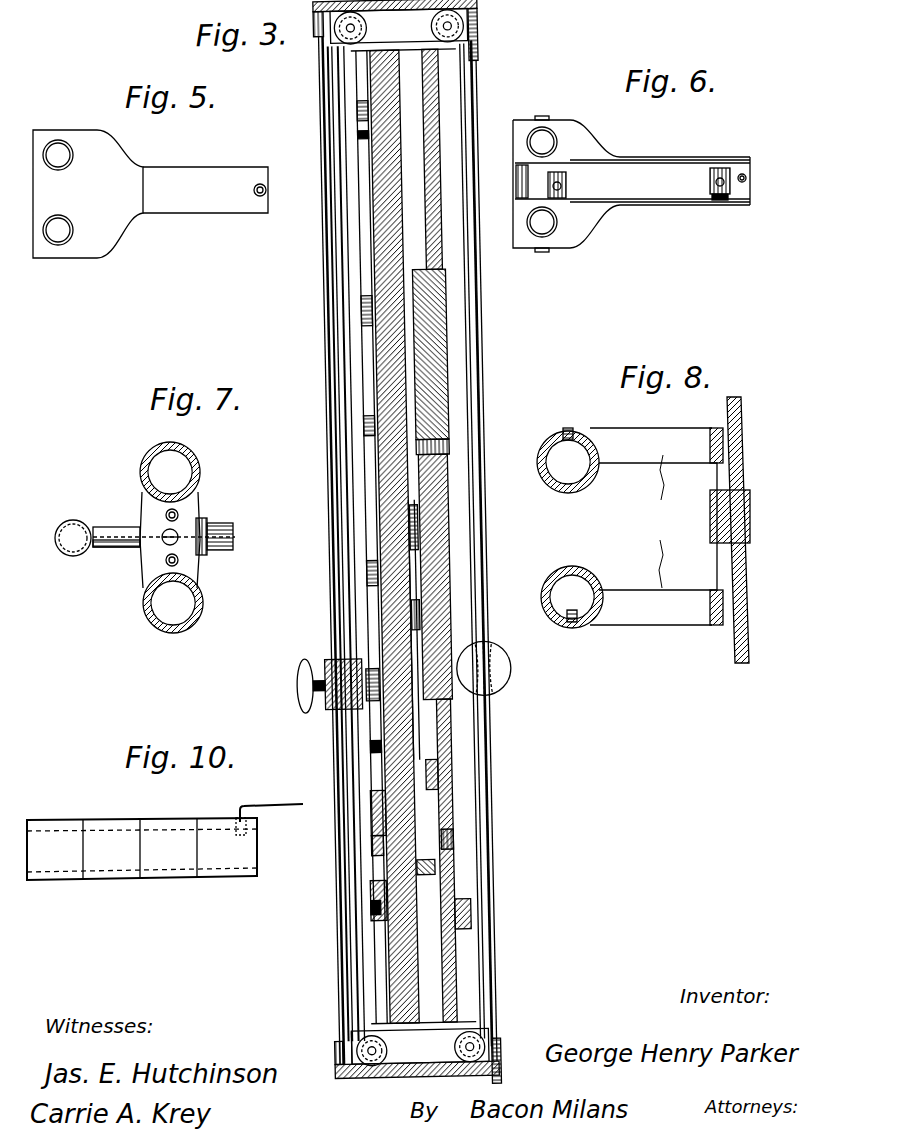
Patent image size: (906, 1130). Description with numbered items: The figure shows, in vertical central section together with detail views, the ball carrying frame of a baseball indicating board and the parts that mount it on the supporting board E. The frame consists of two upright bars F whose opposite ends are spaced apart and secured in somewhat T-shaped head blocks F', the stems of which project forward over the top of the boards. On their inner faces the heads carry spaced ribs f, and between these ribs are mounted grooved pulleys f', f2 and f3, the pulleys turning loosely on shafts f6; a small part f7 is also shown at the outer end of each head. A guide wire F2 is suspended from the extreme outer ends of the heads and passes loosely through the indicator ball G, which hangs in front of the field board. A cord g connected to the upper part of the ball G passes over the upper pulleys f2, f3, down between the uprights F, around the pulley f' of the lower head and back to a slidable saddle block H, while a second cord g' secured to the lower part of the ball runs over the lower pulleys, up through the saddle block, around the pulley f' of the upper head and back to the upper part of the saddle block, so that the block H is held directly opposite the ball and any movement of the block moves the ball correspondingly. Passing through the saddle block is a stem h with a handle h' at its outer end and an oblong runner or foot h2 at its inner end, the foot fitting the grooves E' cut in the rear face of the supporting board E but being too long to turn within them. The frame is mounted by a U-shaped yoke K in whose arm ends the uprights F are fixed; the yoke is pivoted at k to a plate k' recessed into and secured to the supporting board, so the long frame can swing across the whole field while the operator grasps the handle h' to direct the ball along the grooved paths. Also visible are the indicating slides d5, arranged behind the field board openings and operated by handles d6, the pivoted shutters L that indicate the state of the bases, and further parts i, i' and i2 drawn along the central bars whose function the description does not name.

In FIG. 3, the upright bars F is at (392, 549).
In FIG. 5, the upright bars F is at (88, 194).
In FIG. 6, the upright bars F is at (553, 184).
In FIG. 7, the upright bars F is at (178, 470).
In FIG. 8, the upright bars F is at (570, 528).
In FIG. 3, the head blocks F' is at (371, 1064).
In FIG. 5, the head blocks F' is at (191, 190).
In FIG. 6, the head blocks F' is at (632, 201).
In FIG. 3, the guide wire F2 is at (476, 378).
In FIG. 3, the ribs f is at (449, 1020).
In FIG. 6, the ribs f is at (660, 166).
In FIG. 3, the grooved pulleys f' is at (314, 539).
In FIG. 6, the grooved pulleys f' is at (573, 198).
In FIG. 3, the pulley f2 is at (326, 1070).
In FIG. 6, the pulley f2 is at (568, 196).
In FIG. 3, the pulley f3 is at (479, 1045).
In FIG. 6, the pulley f3 is at (725, 201).
In FIG. 3, the shafts f6 is at (368, 1053).
In FIG. 6, the shafts f6 is at (716, 166).
In FIG. 3, the screw f7 is at (480, 50).
In FIG. 5, the screw f7 is at (254, 191).
In FIG. 6, the screw f7 is at (748, 178).
In FIG. 3, the cord g is at (400, 529).
In FIG. 3, the cord g' is at (408, 571).
In FIG. 3, the supporting board E is at (355, 537).
In FIG. 3, the grooves E' is at (342, 538).
In FIG. 3, the shutters L is at (425, 396).
In FIG. 3, the indicator ball G is at (498, 670).
In FIG. 3, the saddle block H is at (325, 660).
In FIG. 7, the saddle block H is at (200, 560).
In FIG. 7, the stem h is at (164, 555).
In FIG. 3, the handle h' is at (297, 686).
In FIG. 7, the handle h' is at (73, 520).
In FIG. 3, the runner or foot h2 is at (366, 686).
In FIG. 7, the runner or foot h2 is at (233, 535).
In FIG. 3, the rod i is at (407, 630).
In FIG. 3, the stop i' is at (391, 836).
In FIG. 3, the pawl i2 is at (402, 905).
In FIG. 3, the pivot k is at (346, 791).
In FIG. 8, the pivot k is at (743, 526).
In FIG. 3, the plate k' is at (476, 844).
In FIG. 8, the plate k' is at (753, 530).
In FIG. 3, the yoke K is at (370, 821).
In FIG. 8, the yoke K is at (653, 526).
In FIG. 3, the slides d5 is at (455, 911).
In FIG. 10, the slides d5 is at (155, 826).
In FIG. 3, the handles d6 is at (360, 906).